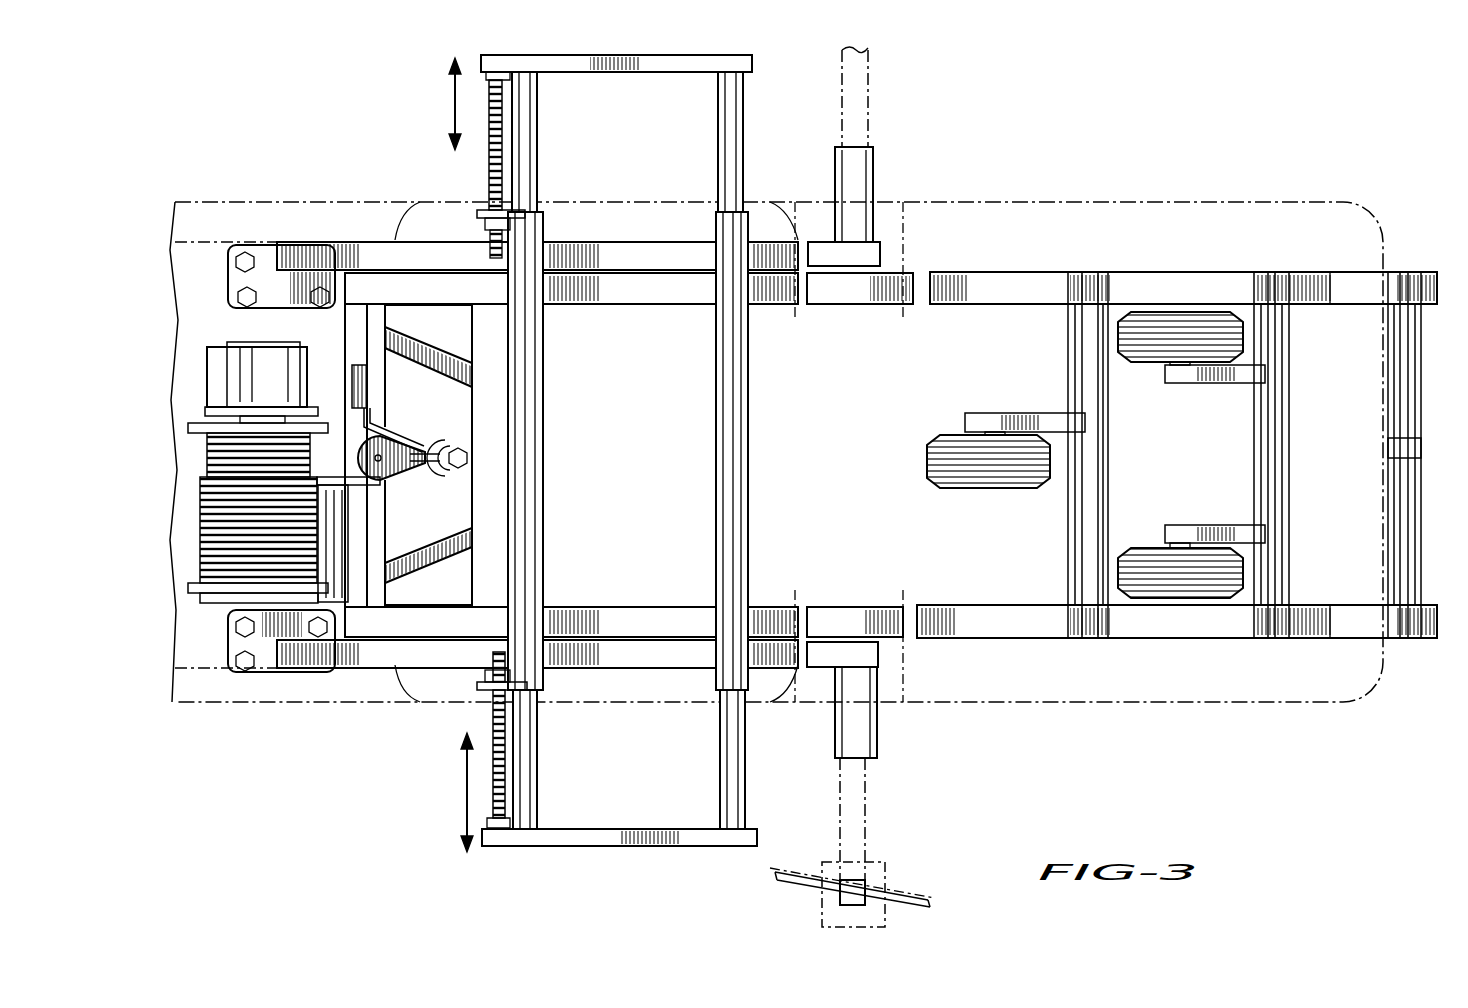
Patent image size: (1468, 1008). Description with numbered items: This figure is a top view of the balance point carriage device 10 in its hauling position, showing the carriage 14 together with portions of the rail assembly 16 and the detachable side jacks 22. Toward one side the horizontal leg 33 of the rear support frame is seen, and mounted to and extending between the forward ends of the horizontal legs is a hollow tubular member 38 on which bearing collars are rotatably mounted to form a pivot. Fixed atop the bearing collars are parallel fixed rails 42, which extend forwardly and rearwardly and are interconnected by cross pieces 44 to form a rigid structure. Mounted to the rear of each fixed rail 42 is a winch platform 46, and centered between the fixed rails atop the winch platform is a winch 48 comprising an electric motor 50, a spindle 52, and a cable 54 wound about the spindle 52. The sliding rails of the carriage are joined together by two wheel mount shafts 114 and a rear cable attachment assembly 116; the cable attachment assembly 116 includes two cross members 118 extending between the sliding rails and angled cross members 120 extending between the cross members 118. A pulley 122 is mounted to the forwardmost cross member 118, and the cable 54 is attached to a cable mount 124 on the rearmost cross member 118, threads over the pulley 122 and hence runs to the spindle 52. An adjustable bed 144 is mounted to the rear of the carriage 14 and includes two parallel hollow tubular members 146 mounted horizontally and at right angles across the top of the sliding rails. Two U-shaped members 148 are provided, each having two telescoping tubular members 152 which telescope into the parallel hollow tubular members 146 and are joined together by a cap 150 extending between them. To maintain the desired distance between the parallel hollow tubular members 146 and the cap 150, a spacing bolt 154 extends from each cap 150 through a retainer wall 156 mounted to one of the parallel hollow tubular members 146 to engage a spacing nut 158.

The balance point carriage device 10 is at (1170, 216).
The carriage 14 is at (601, 606).
The rail assembly 16 is at (888, 253).
The detachable side jacks 22 is at (872, 104).
The horizontal leg 33 is at (598, 250).
The hollow tubular member 38 is at (878, 740).
The fixed rail 42 is at (1406, 624).
The cross pieces 44 is at (1412, 441).
The winch platform 46 is at (358, 520).
The winch 48 is at (326, 568).
The electric motor 50 is at (215, 365).
The spindle 52 is at (222, 597).
The cable 54 is at (343, 477).
The wheel mount shafts 114 is at (1092, 476).
The rear cable attachment assembly 116 is at (476, 402).
The cross members 118 is at (376, 399).
The angled cross members 120 is at (432, 355).
The pulley 122 is at (410, 466).
The cable mount 124 is at (352, 383).
The adjustable bed 144 is at (600, 472).
The parallel hollow tubular members 146 is at (720, 396).
The U-shaped members 148 is at (620, 73).
The cap 150 is at (668, 848).
The telescoping tubular members 152 is at (540, 779).
The spacing bolt 154 is at (495, 772).
The retainer wall 156 is at (490, 690).
The spacing nut 158 is at (490, 676).